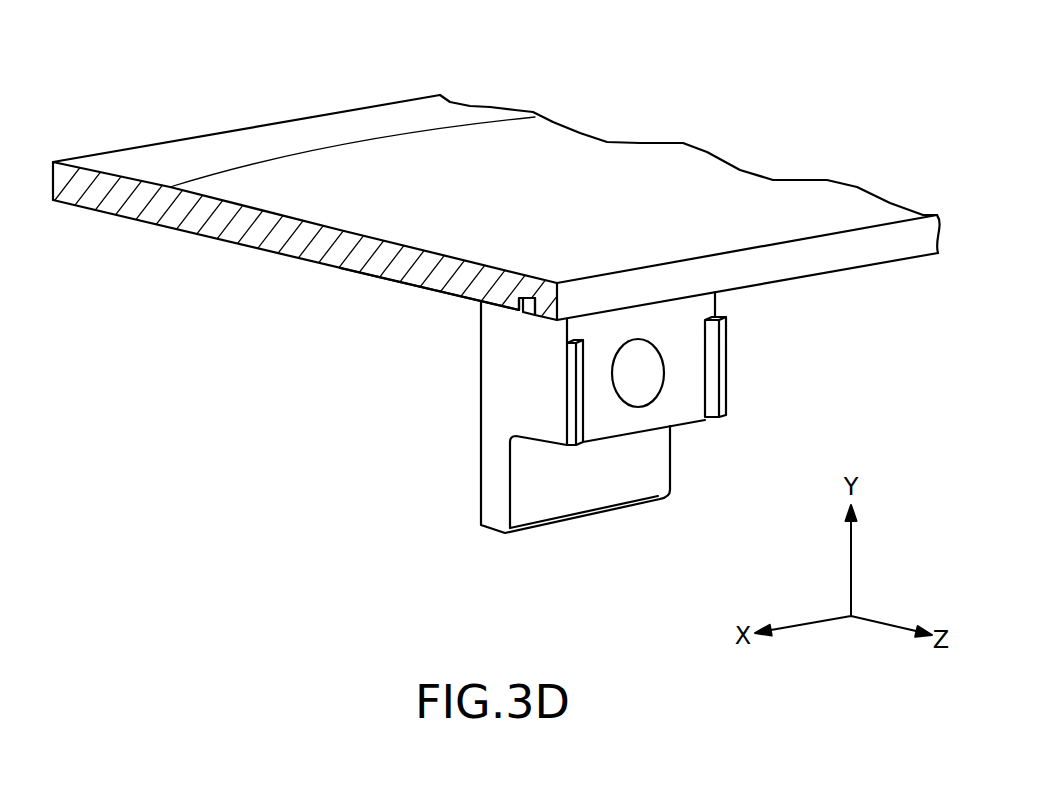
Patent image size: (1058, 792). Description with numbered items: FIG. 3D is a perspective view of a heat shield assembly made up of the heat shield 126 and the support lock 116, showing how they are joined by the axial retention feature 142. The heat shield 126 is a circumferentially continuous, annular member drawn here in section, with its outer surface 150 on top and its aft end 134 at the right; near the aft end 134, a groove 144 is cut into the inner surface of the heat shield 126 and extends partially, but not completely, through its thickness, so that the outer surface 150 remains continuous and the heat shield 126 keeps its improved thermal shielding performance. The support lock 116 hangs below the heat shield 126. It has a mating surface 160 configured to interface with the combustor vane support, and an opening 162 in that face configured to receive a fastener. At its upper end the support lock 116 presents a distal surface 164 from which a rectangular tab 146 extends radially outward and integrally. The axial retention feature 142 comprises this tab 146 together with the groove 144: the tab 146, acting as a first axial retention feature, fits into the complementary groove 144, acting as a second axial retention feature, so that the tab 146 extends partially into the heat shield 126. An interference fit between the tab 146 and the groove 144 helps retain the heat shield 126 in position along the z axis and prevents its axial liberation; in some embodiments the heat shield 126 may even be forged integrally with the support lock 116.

The support lock 116 is at (432, 496).
The heat shield 126 is at (277, 87).
The aft end 134 is at (830, 262).
The axial retention feature 142 is at (494, 348).
The groove 144 is at (536, 279).
The tab 146 is at (523, 326).
The outer surface 150 is at (447, 188).
The mating surface 160 is at (656, 336).
The opening 162 is at (640, 395).
The distal surface 164 is at (500, 307).